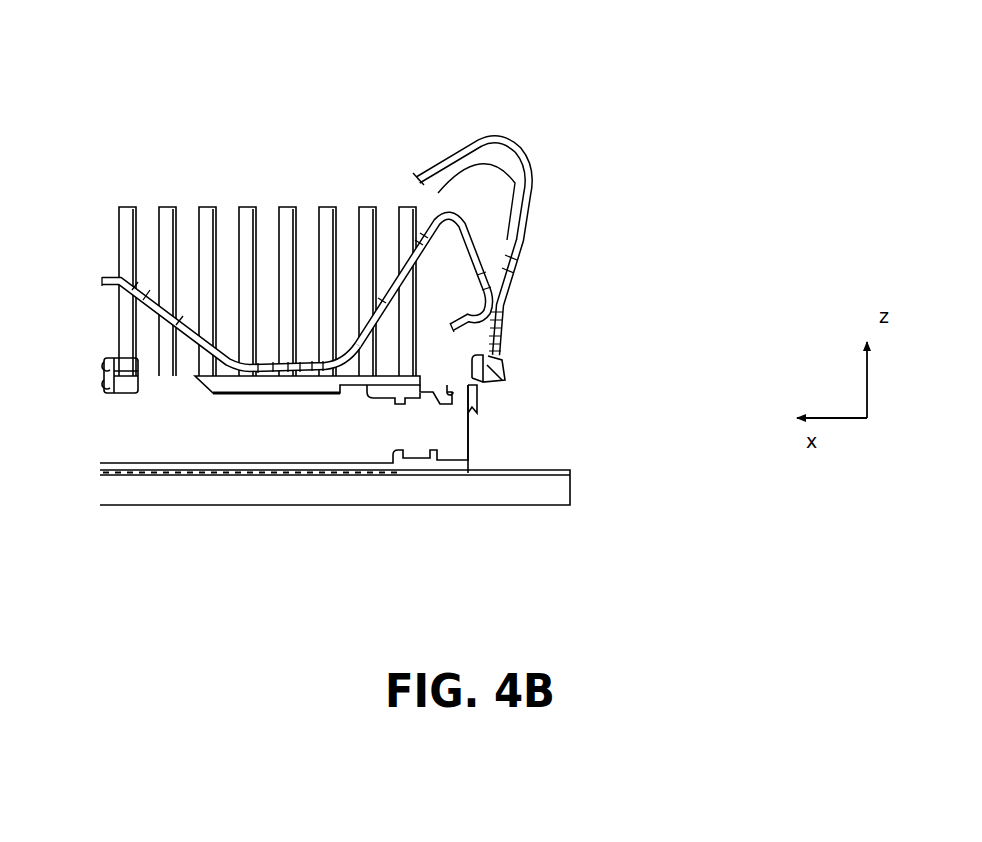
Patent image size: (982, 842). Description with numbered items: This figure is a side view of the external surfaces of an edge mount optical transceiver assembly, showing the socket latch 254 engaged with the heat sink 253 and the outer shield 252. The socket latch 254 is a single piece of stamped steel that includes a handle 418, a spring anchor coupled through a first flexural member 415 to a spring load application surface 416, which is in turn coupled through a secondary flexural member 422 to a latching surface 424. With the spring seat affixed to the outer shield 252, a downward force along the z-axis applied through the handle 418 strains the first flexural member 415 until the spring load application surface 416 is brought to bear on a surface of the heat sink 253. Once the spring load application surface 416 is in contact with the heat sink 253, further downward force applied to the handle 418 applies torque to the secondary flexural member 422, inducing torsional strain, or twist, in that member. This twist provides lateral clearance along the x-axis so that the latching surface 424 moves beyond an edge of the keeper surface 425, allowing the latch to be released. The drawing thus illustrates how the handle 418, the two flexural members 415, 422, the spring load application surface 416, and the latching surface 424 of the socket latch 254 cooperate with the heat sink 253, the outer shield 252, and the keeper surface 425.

The outer shield 252 is at (340, 439).
The heat sink 253 is at (171, 192).
The socket latch 254 is at (486, 88).
The first flexural member 415 is at (142, 292).
The spring load application surface 416 is at (275, 362).
The handle 418 is at (525, 147).
The secondary flexural member 422 is at (420, 240).
The latching surface 424 is at (505, 382).
The keeper surface 425 is at (472, 414).